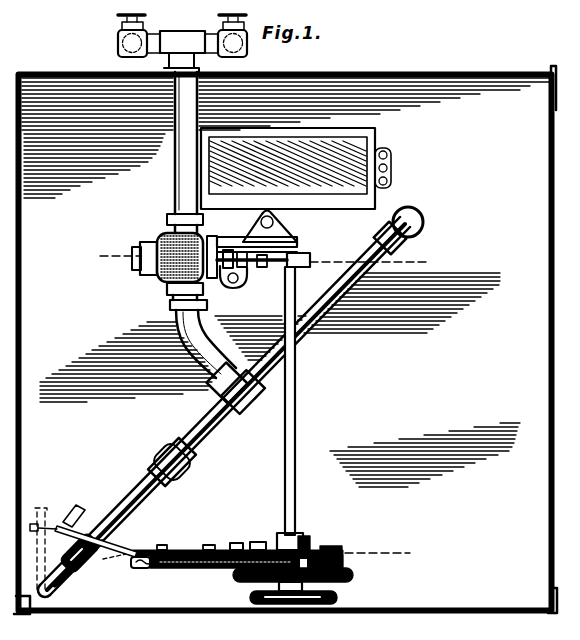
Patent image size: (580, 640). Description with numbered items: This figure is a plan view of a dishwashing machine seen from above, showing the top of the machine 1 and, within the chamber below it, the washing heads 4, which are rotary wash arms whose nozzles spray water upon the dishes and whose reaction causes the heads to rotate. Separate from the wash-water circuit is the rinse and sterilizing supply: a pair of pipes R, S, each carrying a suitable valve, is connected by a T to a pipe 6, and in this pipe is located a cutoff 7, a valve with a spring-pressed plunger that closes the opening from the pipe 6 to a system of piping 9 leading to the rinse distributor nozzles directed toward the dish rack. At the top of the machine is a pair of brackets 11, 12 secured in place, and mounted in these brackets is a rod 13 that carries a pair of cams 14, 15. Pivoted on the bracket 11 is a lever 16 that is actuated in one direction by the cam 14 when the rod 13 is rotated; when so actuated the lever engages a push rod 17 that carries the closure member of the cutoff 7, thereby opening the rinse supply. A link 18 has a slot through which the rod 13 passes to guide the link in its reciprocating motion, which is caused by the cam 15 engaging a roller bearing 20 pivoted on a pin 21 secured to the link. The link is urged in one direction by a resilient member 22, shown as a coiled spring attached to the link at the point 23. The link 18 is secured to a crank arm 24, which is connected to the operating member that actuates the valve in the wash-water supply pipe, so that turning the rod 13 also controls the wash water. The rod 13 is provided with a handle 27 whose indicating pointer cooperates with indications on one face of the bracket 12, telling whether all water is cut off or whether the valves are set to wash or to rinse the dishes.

The top of the machine 1 is at (285, 340).
The washing heads 4 is at (260, 405).
The pipe 6 is at (174, 160).
The cutoff 7 is at (150, 278).
The system of piping 9 is at (372, 270).
The bracket 11 is at (296, 236).
The bracket 12 is at (343, 555).
The rod 13 is at (297, 402).
The cam 14 is at (310, 262).
The cam 15 is at (306, 548).
The lever 16 is at (259, 270).
The push rod 17 is at (238, 252).
The link 18 is at (340, 549).
The roller bearing 20 is at (246, 543).
The pin 21 is at (268, 542).
The resilient member 22 is at (216, 572).
The spring attachment 23 is at (148, 569).
The crank arm 24 is at (78, 520).
The handle 27 is at (339, 598).
The pipe R is at (118, 43).
The pipe S is at (247, 50).